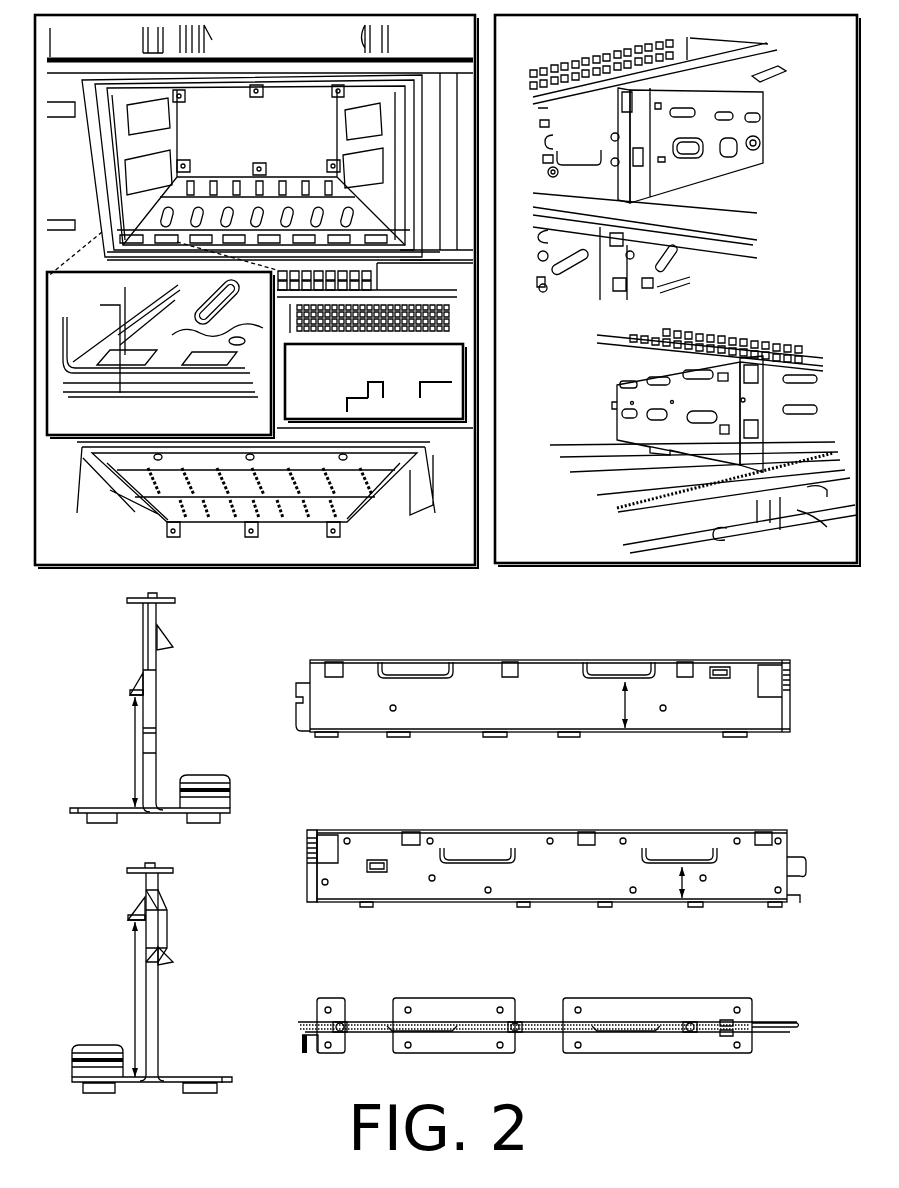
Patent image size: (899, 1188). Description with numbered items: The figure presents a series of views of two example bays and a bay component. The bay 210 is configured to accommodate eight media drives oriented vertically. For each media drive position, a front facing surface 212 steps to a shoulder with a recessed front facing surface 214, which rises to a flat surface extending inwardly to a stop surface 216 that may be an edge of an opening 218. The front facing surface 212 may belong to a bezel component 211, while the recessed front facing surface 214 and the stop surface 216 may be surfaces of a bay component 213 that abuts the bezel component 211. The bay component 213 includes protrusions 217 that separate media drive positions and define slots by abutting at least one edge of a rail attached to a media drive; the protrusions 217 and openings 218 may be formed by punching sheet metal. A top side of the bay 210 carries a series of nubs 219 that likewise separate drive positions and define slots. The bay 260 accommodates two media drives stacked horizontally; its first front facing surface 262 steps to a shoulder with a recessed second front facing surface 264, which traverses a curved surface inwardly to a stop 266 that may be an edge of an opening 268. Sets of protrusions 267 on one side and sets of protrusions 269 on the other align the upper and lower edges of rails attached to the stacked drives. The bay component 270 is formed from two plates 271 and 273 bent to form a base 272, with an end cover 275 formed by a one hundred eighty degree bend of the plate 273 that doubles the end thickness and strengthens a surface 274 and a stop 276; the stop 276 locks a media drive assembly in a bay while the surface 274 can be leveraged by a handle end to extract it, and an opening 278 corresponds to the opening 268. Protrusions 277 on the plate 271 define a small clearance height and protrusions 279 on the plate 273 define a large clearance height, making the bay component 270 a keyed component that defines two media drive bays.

The bay 210 is at (112, 55).
The bezel component 211 is at (100, 388).
The front facing surface 212 is at (120, 340).
The bay component 213 is at (158, 378).
The recessed front facing surface 214 is at (367, 385).
The stop surface 216 is at (127, 292).
The protrusions 217 is at (177, 213).
The opening 218 is at (223, 365).
The nubs 219 is at (170, 498).
The bay 260 is at (546, 49).
The first front facing surface 262 is at (748, 73).
The recessed second front facing surface 264 is at (623, 100).
The stop 266 is at (617, 128).
The protrusions 267 is at (723, 153).
The opening 268 is at (648, 120).
The protrusions 269 is at (617, 427).
The bay component 270 is at (110, 607).
The plate 271 is at (143, 621).
The base 272 is at (130, 814).
The plate 273 is at (158, 698).
The surface 274 is at (165, 925).
The end cover 275 is at (160, 995).
The stop 276 is at (758, 688).
The protrusions 277 is at (130, 688).
The opening 278 is at (323, 857).
The protrusions 279 is at (175, 645).